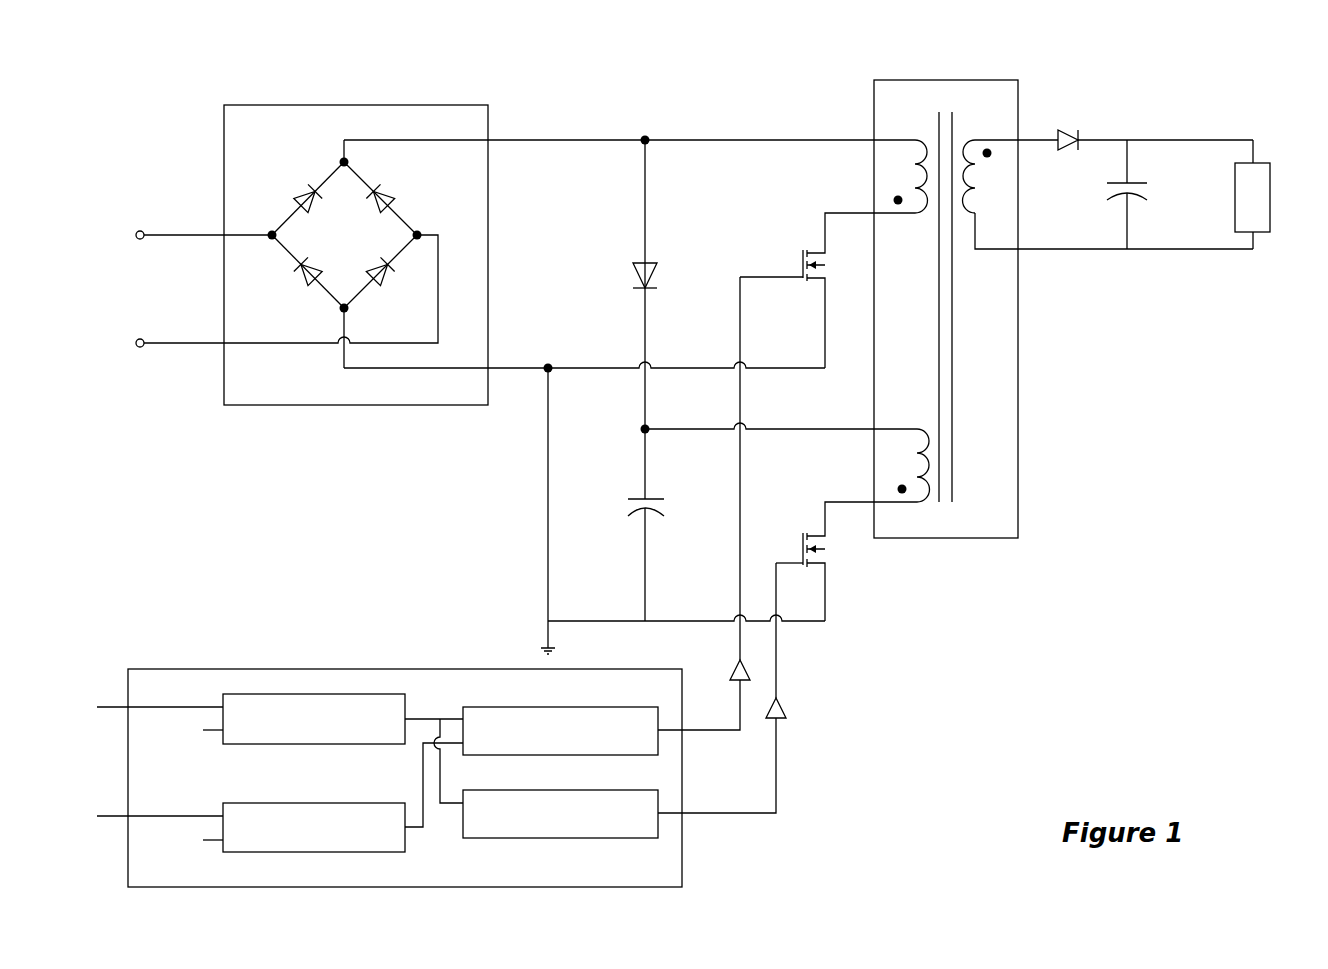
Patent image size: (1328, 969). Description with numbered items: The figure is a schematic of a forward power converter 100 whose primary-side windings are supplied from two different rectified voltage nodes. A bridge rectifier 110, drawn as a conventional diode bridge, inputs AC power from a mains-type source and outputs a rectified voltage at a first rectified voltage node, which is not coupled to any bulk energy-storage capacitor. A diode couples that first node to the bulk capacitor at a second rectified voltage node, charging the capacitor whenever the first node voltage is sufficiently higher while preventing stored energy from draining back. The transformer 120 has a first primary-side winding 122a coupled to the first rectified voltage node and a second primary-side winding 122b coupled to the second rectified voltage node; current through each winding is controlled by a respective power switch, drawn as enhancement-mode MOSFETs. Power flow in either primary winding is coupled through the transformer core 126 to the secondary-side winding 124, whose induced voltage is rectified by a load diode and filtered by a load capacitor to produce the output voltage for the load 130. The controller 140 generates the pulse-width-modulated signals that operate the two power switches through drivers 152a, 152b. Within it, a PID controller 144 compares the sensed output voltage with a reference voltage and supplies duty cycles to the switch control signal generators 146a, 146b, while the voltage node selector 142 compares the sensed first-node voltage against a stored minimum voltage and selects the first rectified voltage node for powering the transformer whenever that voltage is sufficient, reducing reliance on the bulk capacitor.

The forward power converter 100 is at (97, 75).
The bridge rectifier 110 is at (305, 241).
The transformer 120 is at (1063, 296).
The first primary-side winding 122a is at (907, 162).
The second primary-side winding 122b is at (908, 452).
The secondary-side winding 124 is at (1108, 180).
The transformer core 126 is at (949, 319).
The load 130 is at (1264, 185).
The controller 140 is at (365, 766).
The voltage node selector 142 is at (314, 709).
The PID controller 144 is at (314, 814).
The first switch control signal generator 146a is at (560, 718).
The second switch control signal generator 146b is at (560, 801).
The first driver 152a is at (704, 690).
The second driver 152b is at (745, 749).